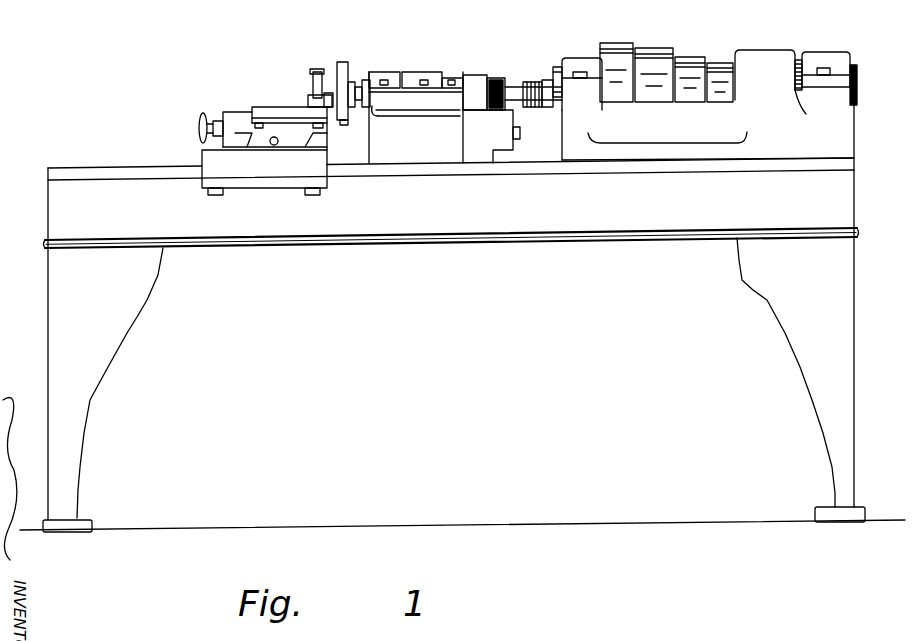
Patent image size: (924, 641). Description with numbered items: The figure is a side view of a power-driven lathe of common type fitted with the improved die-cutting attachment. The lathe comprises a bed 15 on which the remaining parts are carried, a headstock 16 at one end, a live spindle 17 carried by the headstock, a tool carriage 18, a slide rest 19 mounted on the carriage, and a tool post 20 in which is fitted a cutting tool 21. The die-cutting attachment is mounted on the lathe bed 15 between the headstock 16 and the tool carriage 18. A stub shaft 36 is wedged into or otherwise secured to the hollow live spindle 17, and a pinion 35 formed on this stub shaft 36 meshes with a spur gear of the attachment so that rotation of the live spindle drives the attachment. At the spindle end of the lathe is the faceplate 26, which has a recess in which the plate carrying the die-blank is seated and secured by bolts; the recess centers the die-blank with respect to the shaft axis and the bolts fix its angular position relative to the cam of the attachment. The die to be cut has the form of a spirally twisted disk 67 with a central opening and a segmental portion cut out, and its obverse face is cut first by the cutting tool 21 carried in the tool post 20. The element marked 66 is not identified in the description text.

The bed 15 is at (462, 298).
The headstock 16 is at (580, 63).
The live spindle 17 is at (546, 79).
The tool carriage 18 is at (208, 162).
The slide rest 19 is at (235, 122).
The tool post 20 is at (312, 88).
The cutting tool 21 is at (306, 93).
The faceplate 26 is at (338, 62).
The pinion 35 is at (497, 78).
The stub shaft 36 is at (521, 83).
The headstock bearing cap 66 is at (475, 77).
The spirally twisted disk 67 is at (334, 92).